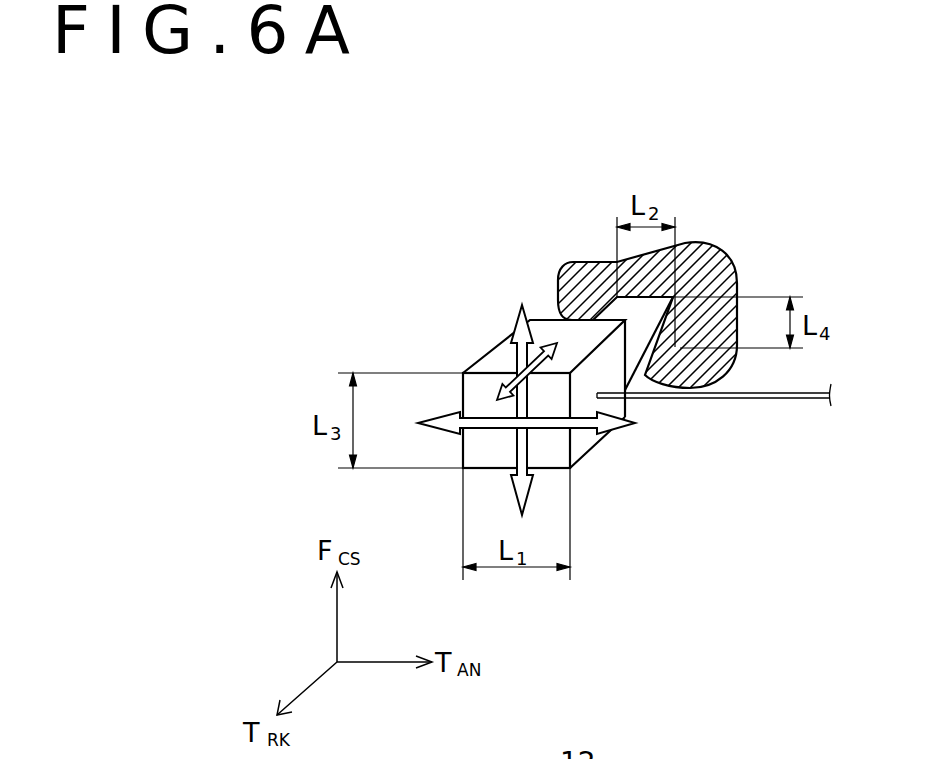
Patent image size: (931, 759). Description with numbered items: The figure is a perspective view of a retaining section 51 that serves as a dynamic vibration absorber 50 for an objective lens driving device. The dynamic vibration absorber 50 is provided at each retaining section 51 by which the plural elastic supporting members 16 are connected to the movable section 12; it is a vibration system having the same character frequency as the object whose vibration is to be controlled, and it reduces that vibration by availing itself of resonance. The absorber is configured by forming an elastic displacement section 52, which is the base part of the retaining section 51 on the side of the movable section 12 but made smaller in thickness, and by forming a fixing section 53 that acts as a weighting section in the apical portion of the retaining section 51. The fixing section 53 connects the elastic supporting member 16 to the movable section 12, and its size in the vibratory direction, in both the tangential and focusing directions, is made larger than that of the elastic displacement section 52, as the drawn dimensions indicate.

The dynamic vibration absorber 50 is at (508, 232).
The retaining section 51 is at (493, 360).
The elastic displacement section 52 is at (650, 350).
The fixing section 53 is at (580, 447).
The movable section 12 is at (580, 273).
The elastic supporting member 16 is at (793, 410).